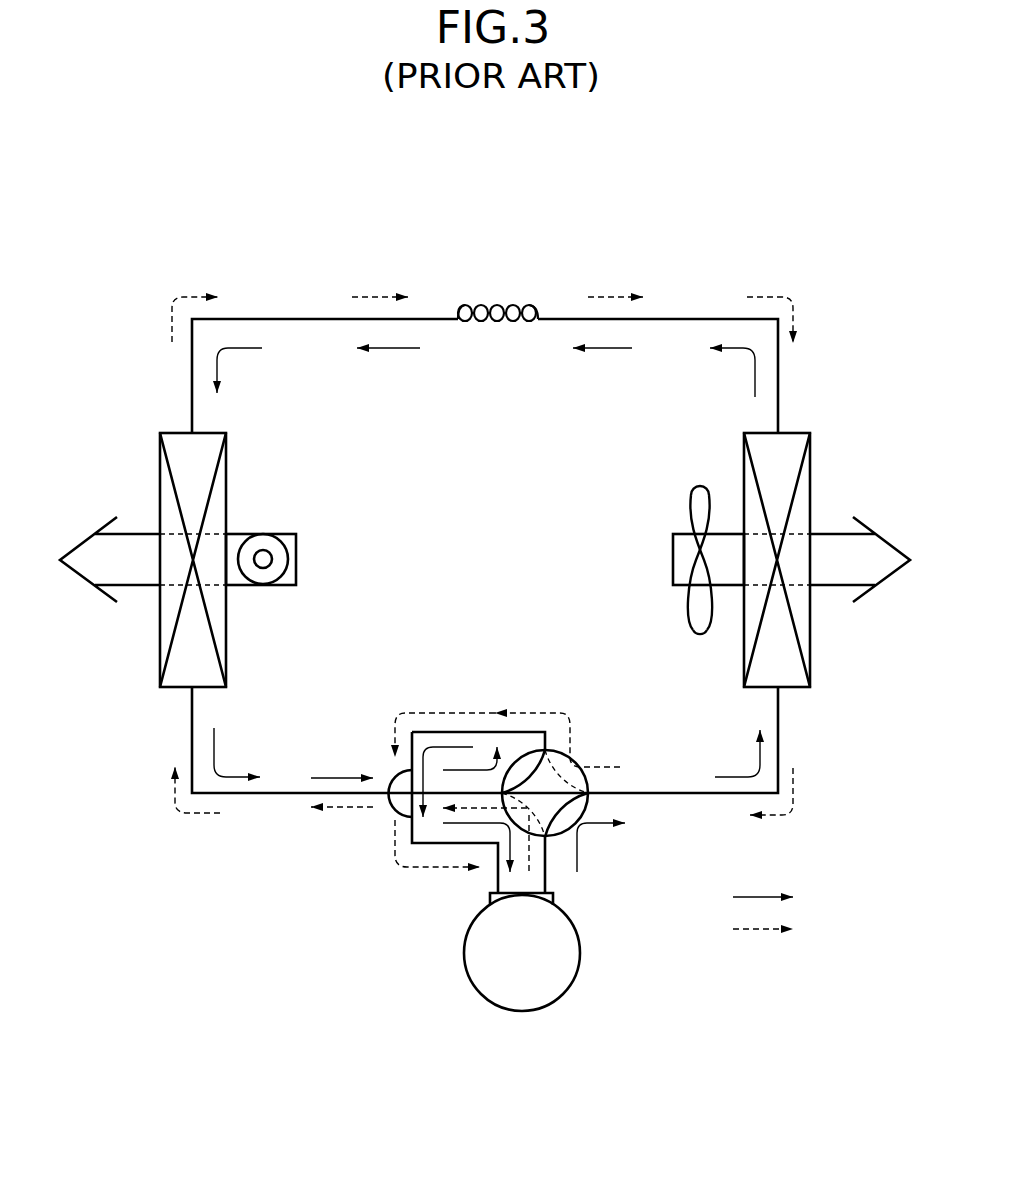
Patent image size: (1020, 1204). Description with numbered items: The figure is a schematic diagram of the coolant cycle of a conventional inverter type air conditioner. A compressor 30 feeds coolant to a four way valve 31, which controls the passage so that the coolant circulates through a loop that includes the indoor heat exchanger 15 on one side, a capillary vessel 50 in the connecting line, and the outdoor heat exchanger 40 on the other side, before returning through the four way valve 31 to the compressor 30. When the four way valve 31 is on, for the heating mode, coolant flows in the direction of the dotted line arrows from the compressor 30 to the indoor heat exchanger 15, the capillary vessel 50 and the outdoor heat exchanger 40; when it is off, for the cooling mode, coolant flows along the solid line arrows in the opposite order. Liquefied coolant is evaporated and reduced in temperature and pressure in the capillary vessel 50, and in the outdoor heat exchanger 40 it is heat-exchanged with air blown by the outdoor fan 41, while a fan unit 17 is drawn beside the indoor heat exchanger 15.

The indoor heat exchanger 15 is at (226, 457).
The indoor fan 17 is at (296, 550).
The compressor 30 is at (580, 953).
The four way valve 31 is at (589, 778).
The outdoor heat exchanger 40 is at (810, 458).
The outdoor fan 41 is at (697, 500).
The capillary vessel 50 is at (500, 302).